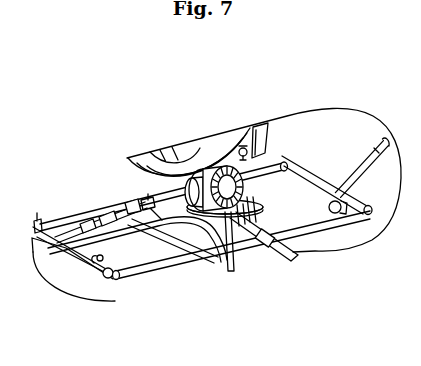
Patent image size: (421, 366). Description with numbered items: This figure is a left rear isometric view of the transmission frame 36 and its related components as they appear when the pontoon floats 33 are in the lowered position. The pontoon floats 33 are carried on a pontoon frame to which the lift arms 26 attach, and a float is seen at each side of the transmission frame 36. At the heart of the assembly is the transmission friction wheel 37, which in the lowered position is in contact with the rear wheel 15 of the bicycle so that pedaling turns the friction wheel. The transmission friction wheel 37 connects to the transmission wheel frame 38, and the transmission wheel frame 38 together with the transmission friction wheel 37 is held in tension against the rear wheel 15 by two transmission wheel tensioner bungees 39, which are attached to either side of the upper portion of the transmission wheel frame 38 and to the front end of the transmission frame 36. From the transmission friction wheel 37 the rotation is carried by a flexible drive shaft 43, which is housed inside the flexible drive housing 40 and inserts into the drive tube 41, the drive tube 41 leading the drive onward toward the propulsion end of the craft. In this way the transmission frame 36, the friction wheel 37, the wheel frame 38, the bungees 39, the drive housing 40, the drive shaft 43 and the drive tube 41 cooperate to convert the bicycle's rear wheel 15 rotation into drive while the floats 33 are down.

The rear wheel 15 is at (165, 157).
The lift arms 26 is at (258, 130).
The pontoon floats 33 is at (318, 135).
The transmission frame 36 is at (168, 263).
The transmission friction wheel 37 is at (215, 158).
The transmission wheel frame 38 is at (255, 245).
The transmission wheel tensioner bungees 39 is at (147, 200).
The flexible drive housing 40 is at (116, 211).
The drive tube 41 is at (228, 270).
The flexible drive shaft 43 is at (86, 224).